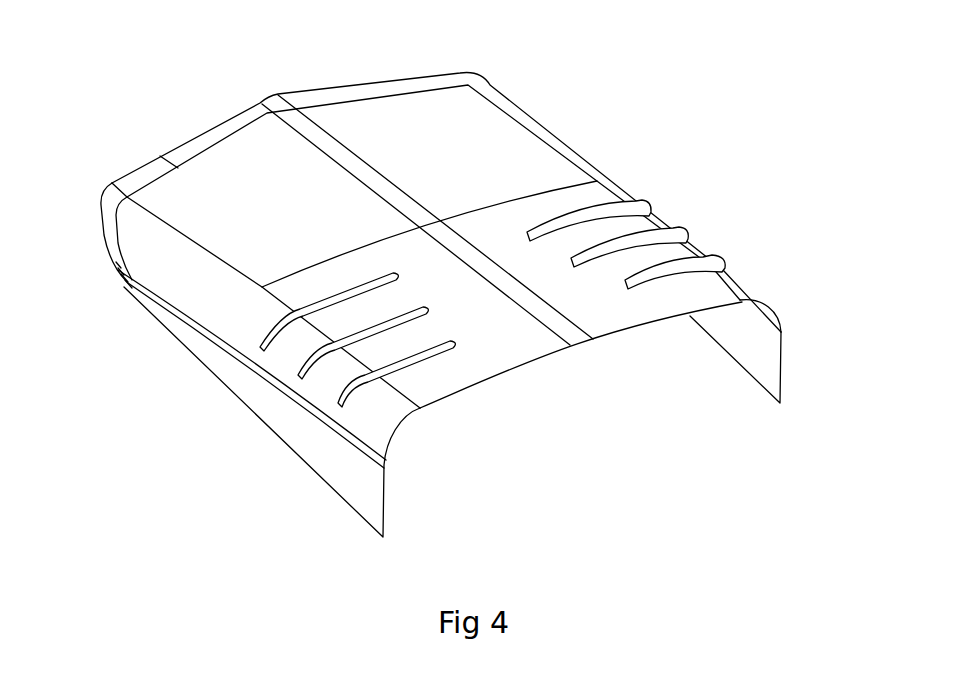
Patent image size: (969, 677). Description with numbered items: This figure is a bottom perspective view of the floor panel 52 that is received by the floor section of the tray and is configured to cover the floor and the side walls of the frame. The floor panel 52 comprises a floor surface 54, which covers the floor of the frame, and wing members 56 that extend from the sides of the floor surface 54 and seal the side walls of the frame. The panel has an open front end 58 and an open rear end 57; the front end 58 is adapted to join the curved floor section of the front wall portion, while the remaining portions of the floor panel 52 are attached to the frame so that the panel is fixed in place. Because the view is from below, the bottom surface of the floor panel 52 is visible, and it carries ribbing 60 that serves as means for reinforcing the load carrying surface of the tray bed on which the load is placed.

The floor panel 52 is at (587, 110).
The floor surface 54 is at (507, 373).
The wing members 56 is at (343, 468).
The open rear end 57 is at (97, 203).
The open front end 58 is at (703, 383).
The ribbing 60 is at (643, 200).